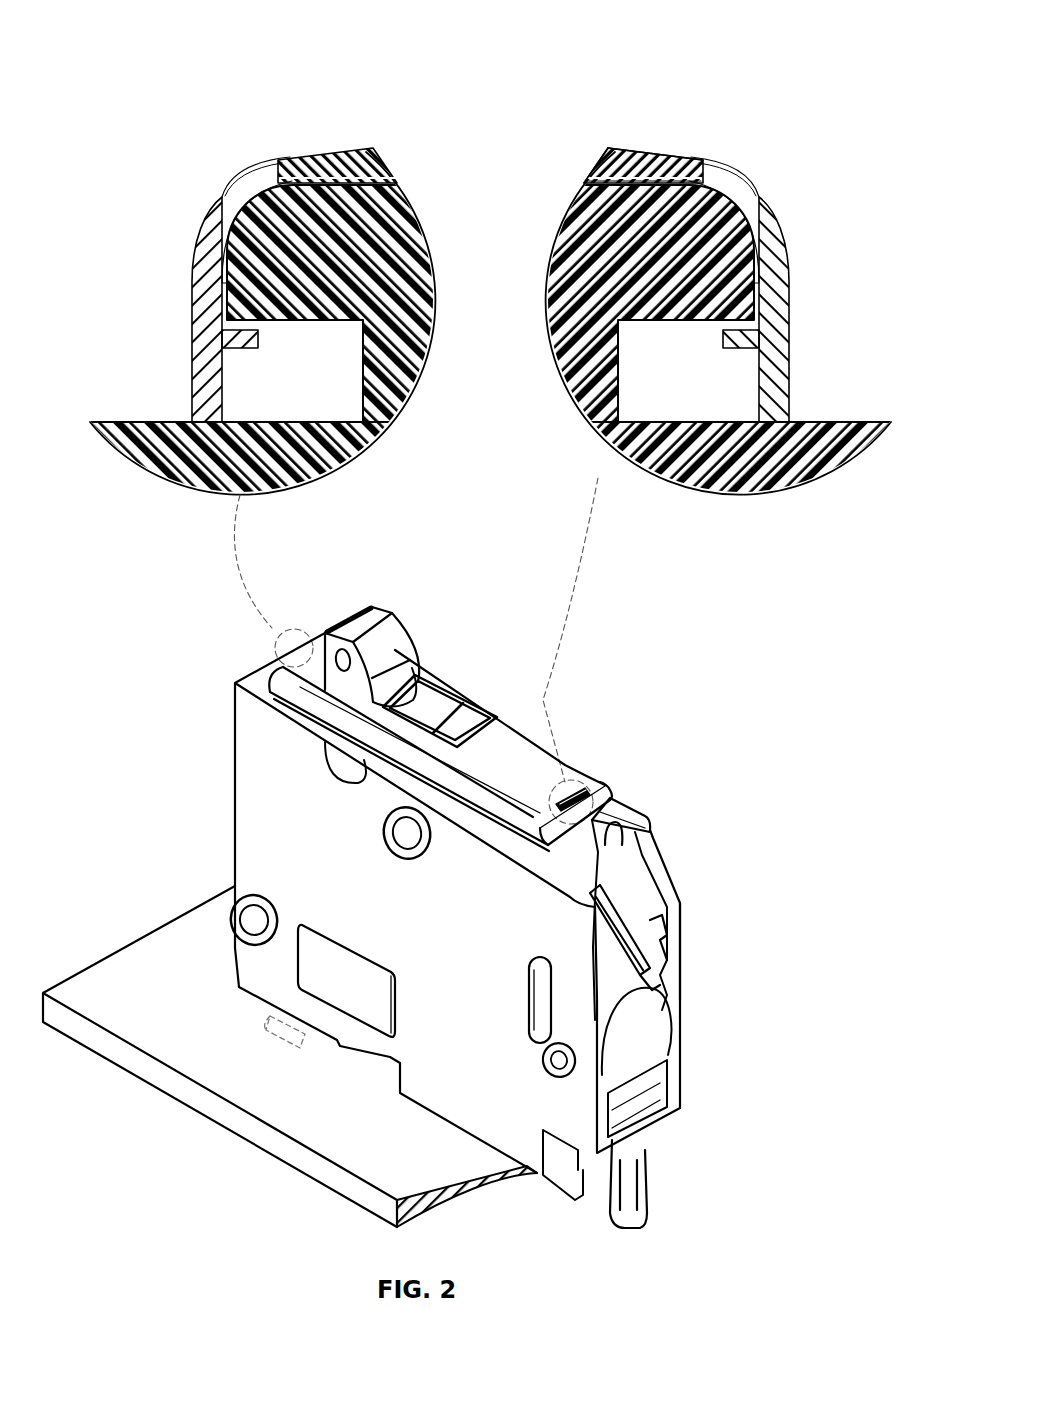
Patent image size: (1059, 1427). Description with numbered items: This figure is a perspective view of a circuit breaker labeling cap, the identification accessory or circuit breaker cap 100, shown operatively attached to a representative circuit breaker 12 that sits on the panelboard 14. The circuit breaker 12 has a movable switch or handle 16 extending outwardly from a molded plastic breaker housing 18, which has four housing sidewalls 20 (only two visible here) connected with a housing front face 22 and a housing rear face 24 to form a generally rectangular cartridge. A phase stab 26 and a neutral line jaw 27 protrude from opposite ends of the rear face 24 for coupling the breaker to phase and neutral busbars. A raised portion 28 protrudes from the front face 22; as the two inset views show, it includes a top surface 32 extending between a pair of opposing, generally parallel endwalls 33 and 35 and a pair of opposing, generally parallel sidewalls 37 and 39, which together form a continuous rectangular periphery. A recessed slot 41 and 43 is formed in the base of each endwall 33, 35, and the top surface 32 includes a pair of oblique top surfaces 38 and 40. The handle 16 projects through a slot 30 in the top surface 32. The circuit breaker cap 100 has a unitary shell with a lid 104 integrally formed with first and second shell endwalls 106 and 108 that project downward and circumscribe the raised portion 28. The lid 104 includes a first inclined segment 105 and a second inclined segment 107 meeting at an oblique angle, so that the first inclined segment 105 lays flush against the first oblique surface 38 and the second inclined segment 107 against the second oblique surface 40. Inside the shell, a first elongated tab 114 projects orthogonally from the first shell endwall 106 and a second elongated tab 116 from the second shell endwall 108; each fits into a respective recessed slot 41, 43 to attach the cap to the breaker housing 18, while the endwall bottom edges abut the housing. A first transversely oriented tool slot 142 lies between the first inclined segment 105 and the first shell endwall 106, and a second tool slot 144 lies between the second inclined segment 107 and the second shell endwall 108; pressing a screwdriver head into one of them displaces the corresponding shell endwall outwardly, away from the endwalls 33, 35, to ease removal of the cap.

The circuit breaker 12 is at (718, 930).
The panelboard 14 is at (148, 960).
The handle 16 is at (346, 628).
The breaker housing 18 is at (678, 876).
The housing sidewall 20 is at (250, 825).
The housing front face 22 is at (116, 420).
The housing rear face 24 is at (462, 1135).
The phase stab 26 is at (275, 1013).
The neutral line jaw 27 is at (640, 1190).
The raised portion 28 is at (402, 205).
The slot 30 is at (400, 708).
The top surface 32 is at (622, 150).
The endwall 33 is at (762, 290).
The endwall 35 is at (220, 290).
The sidewall 37 is at (413, 700).
The first oblique top surface 38 is at (692, 150).
The sidewall 39 is at (432, 702).
The second oblique top surface 40 is at (302, 146).
The recessed slot 41 is at (758, 428).
The recessed slot 43 is at (226, 428).
The circuit breaker cap 100 is at (208, 200).
The lid 104 is at (684, 148).
The first inclined segment 105 is at (655, 150).
The first shell endwall 106 is at (791, 352).
The second inclined segment 107 is at (352, 150).
The second shell endwall 108 is at (191, 352).
The first elongated tab 114 is at (724, 340).
The second elongated tab 116 is at (258, 340).
The first tool slot 142 is at (727, 172).
The second tool slot 144 is at (257, 172).